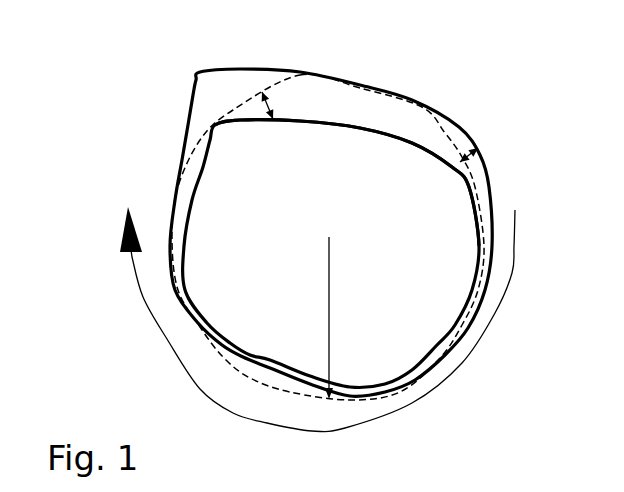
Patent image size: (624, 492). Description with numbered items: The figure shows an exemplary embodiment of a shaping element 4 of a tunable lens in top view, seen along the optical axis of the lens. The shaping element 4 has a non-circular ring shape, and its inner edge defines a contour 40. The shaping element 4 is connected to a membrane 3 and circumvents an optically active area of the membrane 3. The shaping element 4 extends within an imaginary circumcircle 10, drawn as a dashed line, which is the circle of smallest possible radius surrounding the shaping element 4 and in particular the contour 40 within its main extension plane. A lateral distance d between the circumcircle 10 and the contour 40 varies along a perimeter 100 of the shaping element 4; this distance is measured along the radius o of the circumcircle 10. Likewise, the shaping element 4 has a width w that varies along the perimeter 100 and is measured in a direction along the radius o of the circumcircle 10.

The shaping element 4 is at (213, 92).
The contour 40 is at (293, 123).
The membrane 3 is at (435, 225).
The circumcircle 10 is at (340, 77).
The perimeter 100 is at (170, 353).
The lateral distance d is at (267, 96).
The width w is at (478, 146).
The radius o is at (332, 276).